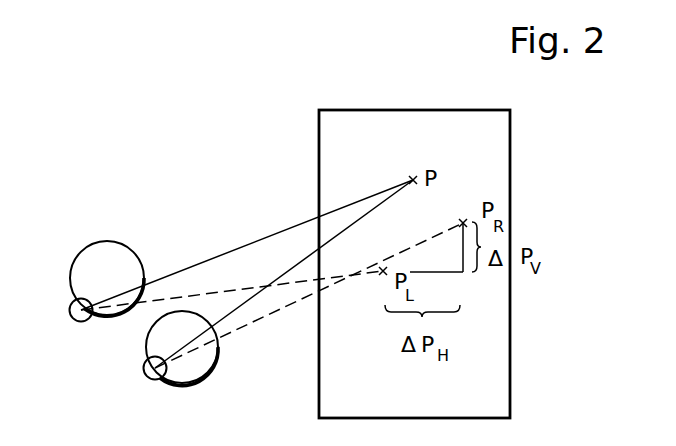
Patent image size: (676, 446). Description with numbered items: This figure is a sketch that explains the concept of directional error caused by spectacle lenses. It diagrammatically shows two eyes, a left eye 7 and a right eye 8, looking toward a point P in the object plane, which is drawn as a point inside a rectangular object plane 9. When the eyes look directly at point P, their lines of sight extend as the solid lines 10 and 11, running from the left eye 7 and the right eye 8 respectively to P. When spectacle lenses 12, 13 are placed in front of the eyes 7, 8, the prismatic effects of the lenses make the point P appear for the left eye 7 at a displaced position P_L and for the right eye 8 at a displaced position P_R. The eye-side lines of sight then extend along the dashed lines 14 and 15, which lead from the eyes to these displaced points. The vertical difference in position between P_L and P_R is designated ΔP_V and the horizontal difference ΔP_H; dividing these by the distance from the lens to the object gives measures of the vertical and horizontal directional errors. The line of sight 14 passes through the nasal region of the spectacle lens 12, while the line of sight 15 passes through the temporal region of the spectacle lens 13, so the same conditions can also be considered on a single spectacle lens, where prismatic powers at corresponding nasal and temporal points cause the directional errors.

The left eye 7 is at (70, 318).
The right eye 8 is at (147, 378).
The display screen 9 is at (495, 183).
The line of sight 10 is at (253, 243).
The line of sight 11 is at (307, 260).
The spectacle lens 12 is at (137, 252).
The spectacle lens 13 is at (202, 378).
The line of sight 14 is at (209, 290).
The line of sight 15 is at (288, 307).